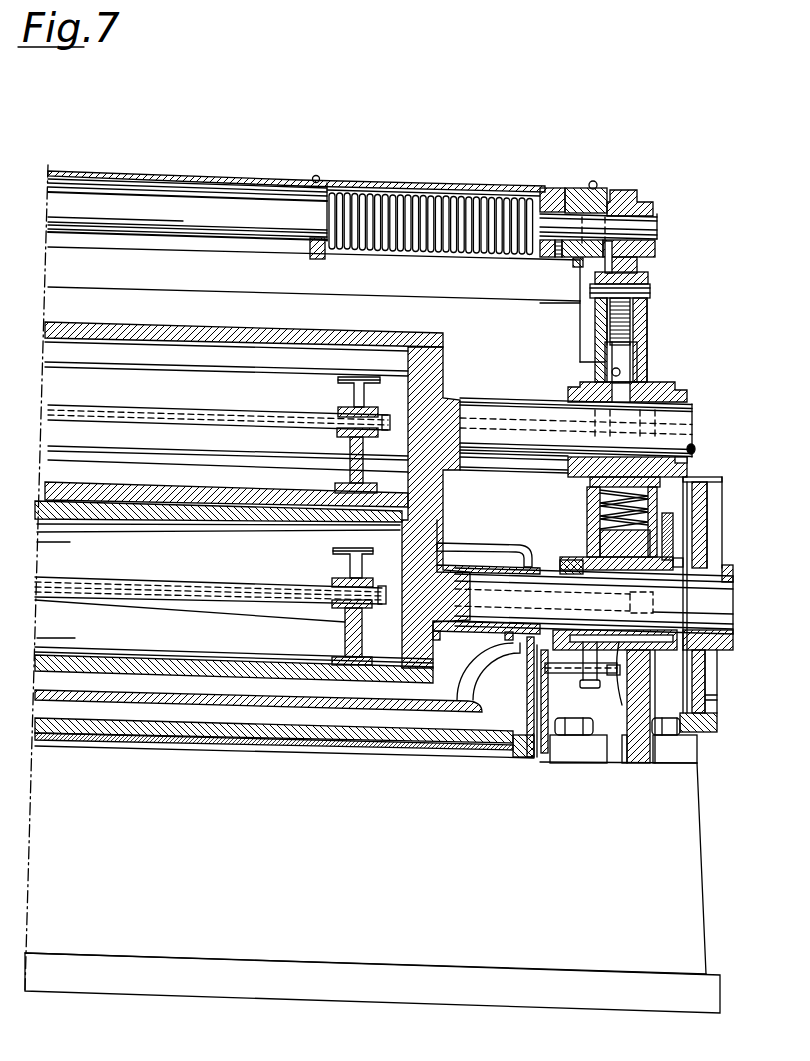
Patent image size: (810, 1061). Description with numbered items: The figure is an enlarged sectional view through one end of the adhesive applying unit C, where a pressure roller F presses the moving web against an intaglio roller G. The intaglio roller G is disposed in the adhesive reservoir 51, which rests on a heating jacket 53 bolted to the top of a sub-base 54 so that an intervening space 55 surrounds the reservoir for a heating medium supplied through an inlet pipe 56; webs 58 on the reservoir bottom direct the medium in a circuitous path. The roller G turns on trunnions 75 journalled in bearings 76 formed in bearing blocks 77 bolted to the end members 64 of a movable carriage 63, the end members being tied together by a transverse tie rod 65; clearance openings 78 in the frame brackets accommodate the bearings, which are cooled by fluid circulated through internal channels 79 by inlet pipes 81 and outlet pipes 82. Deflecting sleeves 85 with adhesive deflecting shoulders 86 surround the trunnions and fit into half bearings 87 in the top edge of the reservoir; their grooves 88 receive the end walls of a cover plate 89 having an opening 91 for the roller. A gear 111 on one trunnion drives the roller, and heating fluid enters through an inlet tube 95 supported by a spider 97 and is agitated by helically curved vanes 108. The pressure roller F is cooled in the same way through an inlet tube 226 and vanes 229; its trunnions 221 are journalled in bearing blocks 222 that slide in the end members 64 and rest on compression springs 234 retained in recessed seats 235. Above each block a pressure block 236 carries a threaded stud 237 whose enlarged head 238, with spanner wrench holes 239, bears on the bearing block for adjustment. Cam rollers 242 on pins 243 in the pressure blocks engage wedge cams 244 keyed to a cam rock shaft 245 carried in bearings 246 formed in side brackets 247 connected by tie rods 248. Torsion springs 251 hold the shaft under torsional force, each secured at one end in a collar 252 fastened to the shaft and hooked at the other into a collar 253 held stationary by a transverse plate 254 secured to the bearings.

The cam rock shaft 245 is at (255, 207).
The transverse plate 254 is at (386, 186).
The torsion springs 251 is at (445, 208).
The collar 252 is at (553, 196).
The bearings 246 is at (578, 192).
The wedge cams 244 is at (628, 192).
The collar 253 is at (318, 260).
The tie rods 248 is at (197, 246).
The side brackets 247 is at (590, 292).
The cam rollers 242 is at (641, 269).
The pins 243 is at (645, 293).
The pressure block 236 is at (650, 321).
The threaded stud 237 is at (597, 332).
The enlarged head 238 is at (612, 363).
The spanner wrench holes 239 is at (611, 373).
The movable carriage 63 is at (652, 352).
The end members 64 is at (643, 372).
The bearing block 222 is at (688, 395).
The trunnions 221 is at (683, 415).
The transverse tie rod 65 is at (530, 467).
The compression springs 234 is at (603, 490).
The recessed seats 235 is at (602, 505).
The outlet pipes 82 is at (675, 523).
The bearing blocks 77 is at (593, 558).
The internal channels 79 is at (568, 563).
The trunnions 75 is at (730, 595).
The clearance openings 78 is at (657, 652).
The gear 111 is at (717, 722).
The inlet pipes 81 is at (591, 682).
The inlet pipe 56 is at (568, 675).
The bearings 76 is at (622, 694).
The pressure roller F is at (248, 333).
The helically curved vanes 229 is at (300, 355).
The inlet tube 226 is at (237, 413).
The intaglio roller G is at (250, 683).
The helically curved vanes 108 is at (297, 534).
The inlet tube 95 is at (212, 590).
The spider 97 is at (350, 640).
The cover plate 89 is at (463, 543).
The grooves 88 is at (530, 557).
The opening 91 is at (441, 534).
The deflecting sleeves 85 is at (470, 633).
The adhesive deflecting shoulders 86 is at (436, 636).
The half bearings 87 is at (514, 662).
The reservoir 51 is at (452, 700).
The intervening space 55 is at (298, 746).
The webs 58 is at (357, 720).
The heating jacket 53 is at (468, 736).
The sub-base 54 is at (372, 977).
The adhesive applying unit C is at (312, 997).